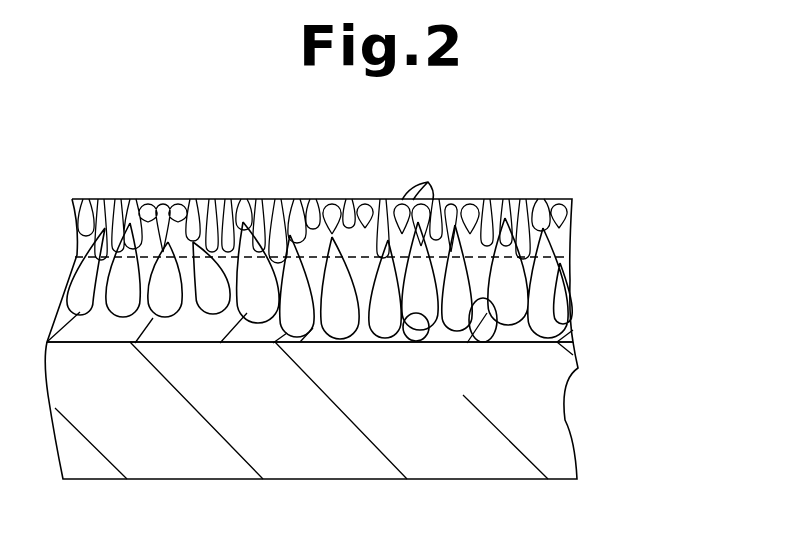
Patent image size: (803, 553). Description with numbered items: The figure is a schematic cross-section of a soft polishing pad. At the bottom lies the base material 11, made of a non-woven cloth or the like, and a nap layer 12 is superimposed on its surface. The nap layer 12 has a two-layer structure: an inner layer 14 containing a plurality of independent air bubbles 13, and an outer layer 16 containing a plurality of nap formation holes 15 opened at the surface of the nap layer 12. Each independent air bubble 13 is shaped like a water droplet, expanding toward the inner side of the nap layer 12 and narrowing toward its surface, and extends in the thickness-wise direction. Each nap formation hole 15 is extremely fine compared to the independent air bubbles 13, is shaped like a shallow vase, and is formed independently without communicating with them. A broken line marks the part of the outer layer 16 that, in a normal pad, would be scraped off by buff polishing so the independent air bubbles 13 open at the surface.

The base material 11 is at (567, 417).
The nap layer 12 is at (555, 199).
The independent air bubble 13 is at (475, 360).
The inner layer 14 is at (570, 333).
The nap formation hole 15 is at (418, 175).
The outer layer 16 is at (572, 230).